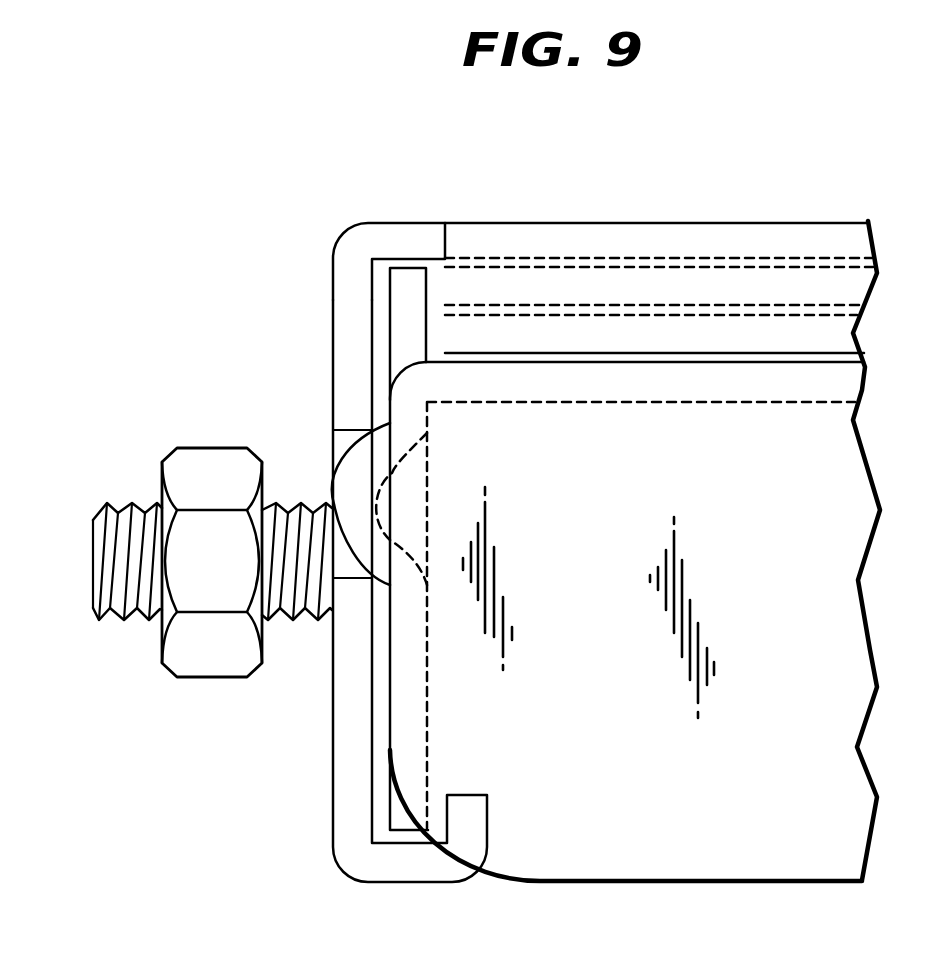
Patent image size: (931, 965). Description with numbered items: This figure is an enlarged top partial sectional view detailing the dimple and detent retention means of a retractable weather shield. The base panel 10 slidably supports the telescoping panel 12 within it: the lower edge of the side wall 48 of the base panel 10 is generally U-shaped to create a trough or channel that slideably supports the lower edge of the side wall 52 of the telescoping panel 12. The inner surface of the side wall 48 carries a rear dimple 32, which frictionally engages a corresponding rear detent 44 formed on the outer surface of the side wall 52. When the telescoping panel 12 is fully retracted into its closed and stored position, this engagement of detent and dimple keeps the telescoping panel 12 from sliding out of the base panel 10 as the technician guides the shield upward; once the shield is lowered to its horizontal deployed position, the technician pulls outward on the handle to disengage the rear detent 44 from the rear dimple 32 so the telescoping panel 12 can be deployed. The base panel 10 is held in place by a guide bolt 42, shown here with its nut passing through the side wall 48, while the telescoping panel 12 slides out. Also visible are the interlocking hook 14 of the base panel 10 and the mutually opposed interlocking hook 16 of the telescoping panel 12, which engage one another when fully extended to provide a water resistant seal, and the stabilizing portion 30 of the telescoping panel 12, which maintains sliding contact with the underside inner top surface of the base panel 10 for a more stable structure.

The base panel 10 is at (403, 240).
The telescoping panel 12 is at (535, 385).
The interlocking hook 14 is at (698, 335).
The interlocking hook 16 is at (623, 258).
The stabilizing portion 30 is at (392, 290).
The rear dimple 32 is at (340, 452).
The guide bolt 42 is at (103, 525).
The rear detent 44 is at (347, 490).
The side wall 48 is at (345, 735).
The side wall 52 is at (410, 748).